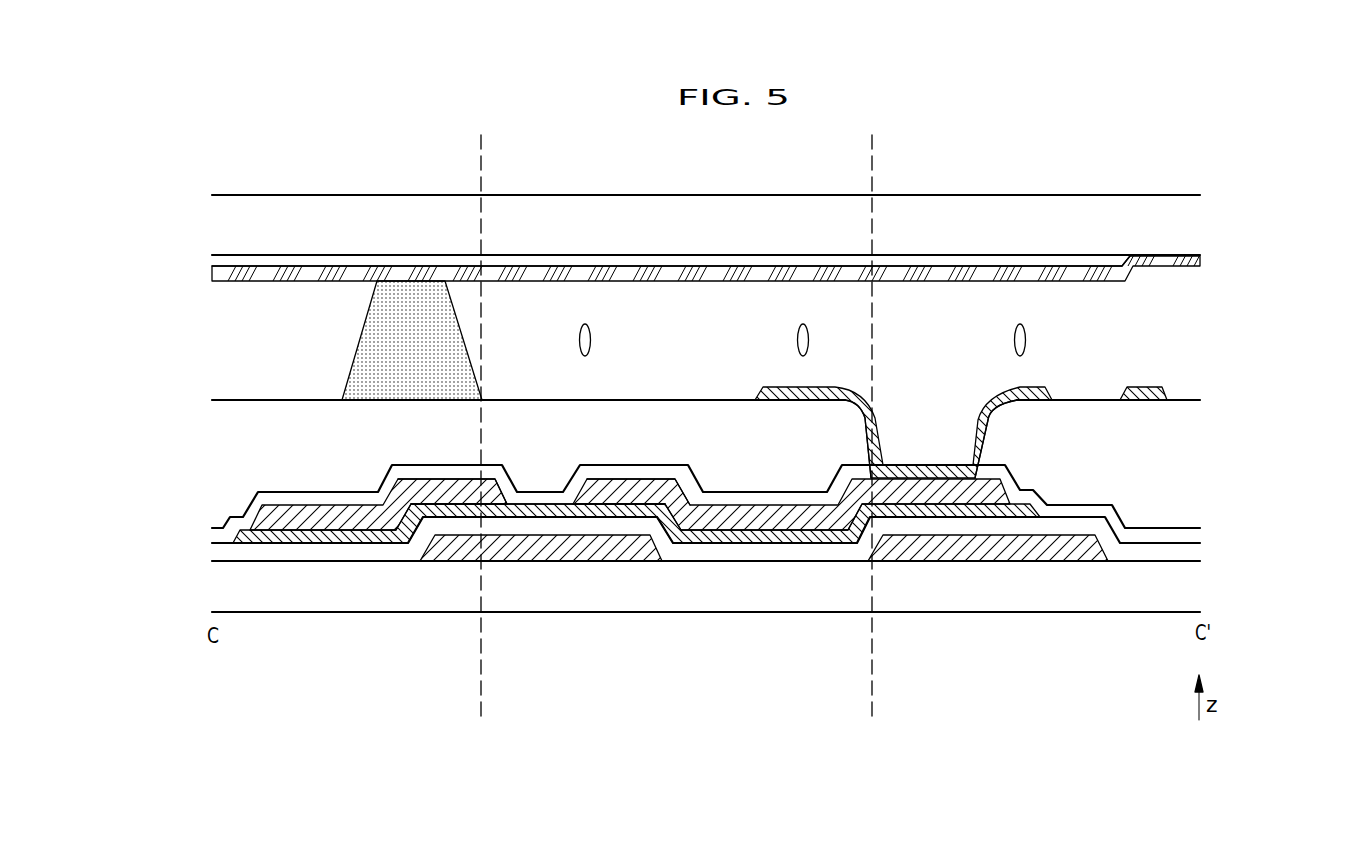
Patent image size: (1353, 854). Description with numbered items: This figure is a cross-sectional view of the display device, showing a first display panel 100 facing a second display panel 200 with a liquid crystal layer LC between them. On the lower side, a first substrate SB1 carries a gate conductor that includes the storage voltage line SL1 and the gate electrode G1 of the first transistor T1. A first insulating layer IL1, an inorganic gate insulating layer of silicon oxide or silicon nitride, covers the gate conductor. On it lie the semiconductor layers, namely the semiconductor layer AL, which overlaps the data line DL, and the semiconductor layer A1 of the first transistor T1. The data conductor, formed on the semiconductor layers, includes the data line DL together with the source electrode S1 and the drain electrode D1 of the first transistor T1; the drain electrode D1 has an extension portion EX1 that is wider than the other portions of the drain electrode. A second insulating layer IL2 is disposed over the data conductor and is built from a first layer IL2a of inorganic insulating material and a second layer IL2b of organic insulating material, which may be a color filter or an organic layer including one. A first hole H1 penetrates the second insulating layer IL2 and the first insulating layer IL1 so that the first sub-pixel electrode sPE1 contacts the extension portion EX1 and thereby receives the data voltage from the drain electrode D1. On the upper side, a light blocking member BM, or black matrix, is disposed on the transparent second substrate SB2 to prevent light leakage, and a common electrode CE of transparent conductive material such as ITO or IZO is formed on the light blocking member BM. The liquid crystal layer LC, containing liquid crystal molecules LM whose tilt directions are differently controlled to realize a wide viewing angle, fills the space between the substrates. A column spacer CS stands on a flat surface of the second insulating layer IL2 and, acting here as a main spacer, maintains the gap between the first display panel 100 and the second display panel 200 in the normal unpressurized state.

The second display panel 200 is at (207, 195).
The first display panel 100 is at (207, 400).
The second substrate SB2 is at (1190, 222).
The light blocking member BM is at (1045, 262).
The common electrode CE is at (1200, 263).
The liquid crystal layer LC is at (1190, 333).
The column spacer CS is at (372, 341).
The liquid crystal molecules LM is at (592, 340).
The first substrate SB1 is at (1190, 588).
The storage voltage line SL1 is at (1019, 550).
The first insulating layer IL1 is at (1195, 553).
The semiconductor layer AL is at (258, 538).
The data line DL is at (288, 518).
The extension portion EX1 is at (936, 492).
The first transistor T1 is at (614, 655).
The gate electrode G1 is at (521, 550).
The semiconductor layer A1 is at (558, 511).
The source electrode S1 is at (472, 492).
The drain electrode D1 is at (602, 492).
The second insulating layer IL2 is at (1267, 443).
The first layer IL2a is at (1195, 532).
The second layer IL2b is at (1190, 457).
The first hole H1 is at (878, 435).
The first sub-pixel electrode sPE1 is at (1123, 388).